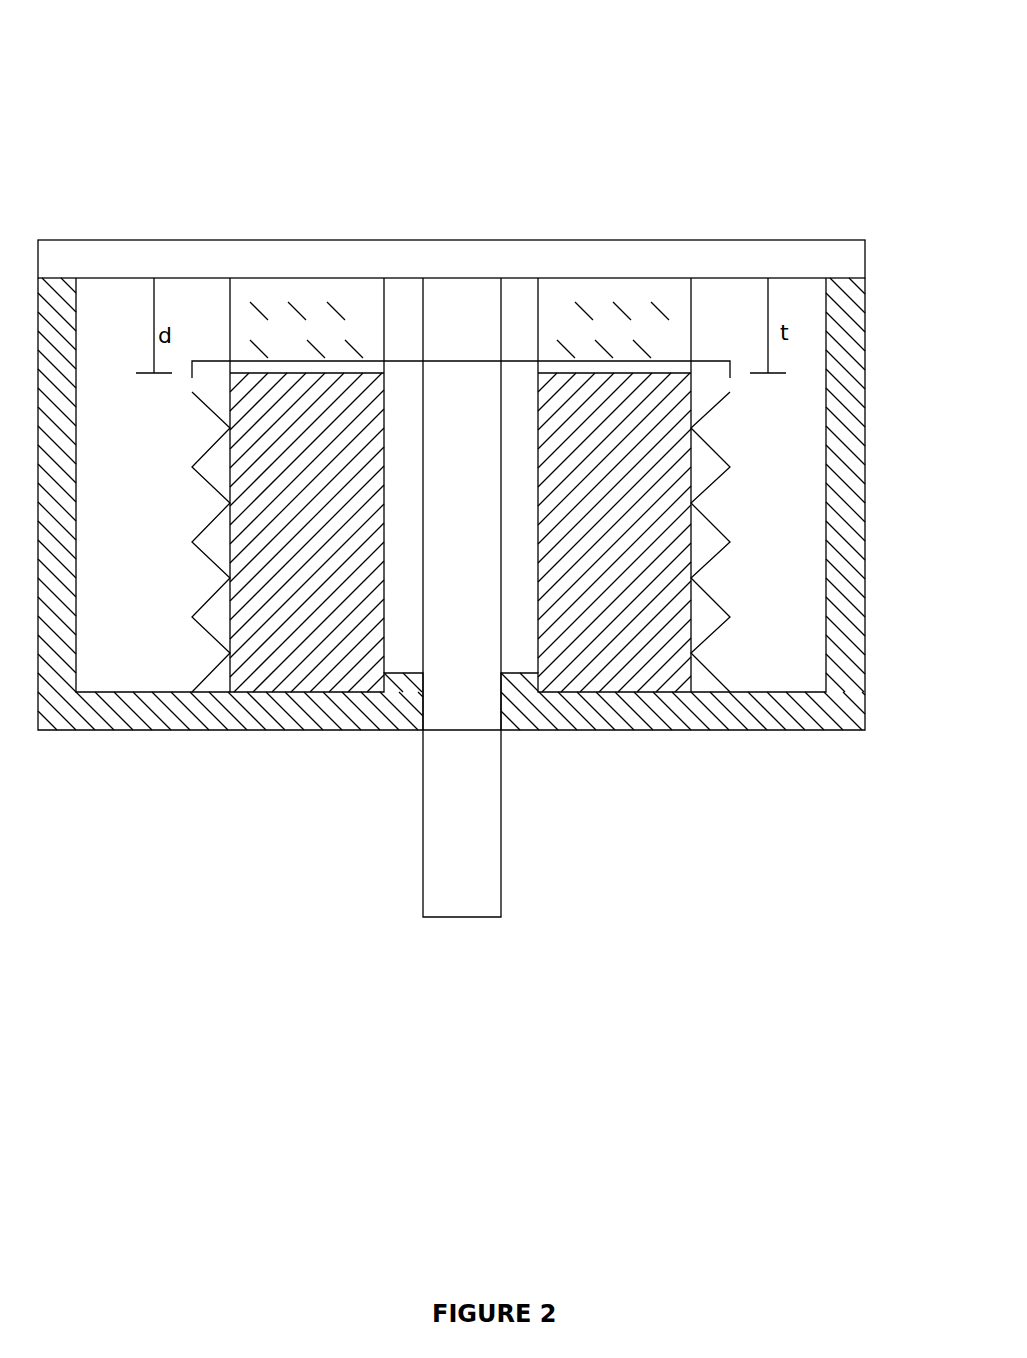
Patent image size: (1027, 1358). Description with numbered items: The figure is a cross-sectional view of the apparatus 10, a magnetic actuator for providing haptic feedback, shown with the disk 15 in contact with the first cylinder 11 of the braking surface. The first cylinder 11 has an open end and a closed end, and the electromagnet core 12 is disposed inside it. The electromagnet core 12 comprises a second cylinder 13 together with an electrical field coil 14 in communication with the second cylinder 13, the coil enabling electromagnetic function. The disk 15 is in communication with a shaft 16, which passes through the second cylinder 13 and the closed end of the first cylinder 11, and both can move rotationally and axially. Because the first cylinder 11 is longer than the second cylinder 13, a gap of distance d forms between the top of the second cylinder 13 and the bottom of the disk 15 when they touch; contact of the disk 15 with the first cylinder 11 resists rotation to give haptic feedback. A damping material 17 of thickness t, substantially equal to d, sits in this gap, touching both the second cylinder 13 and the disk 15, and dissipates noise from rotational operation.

The apparatus 10 is at (143, 87).
The first cylinder 11 is at (116, 717).
The electromagnet core 12 is at (710, 361).
The second cylinder 13 is at (635, 662).
The electrical field coil 14 is at (730, 530).
The disk 15 is at (595, 247).
The shaft 16 is at (462, 867).
The damping material 17 is at (557, 322).